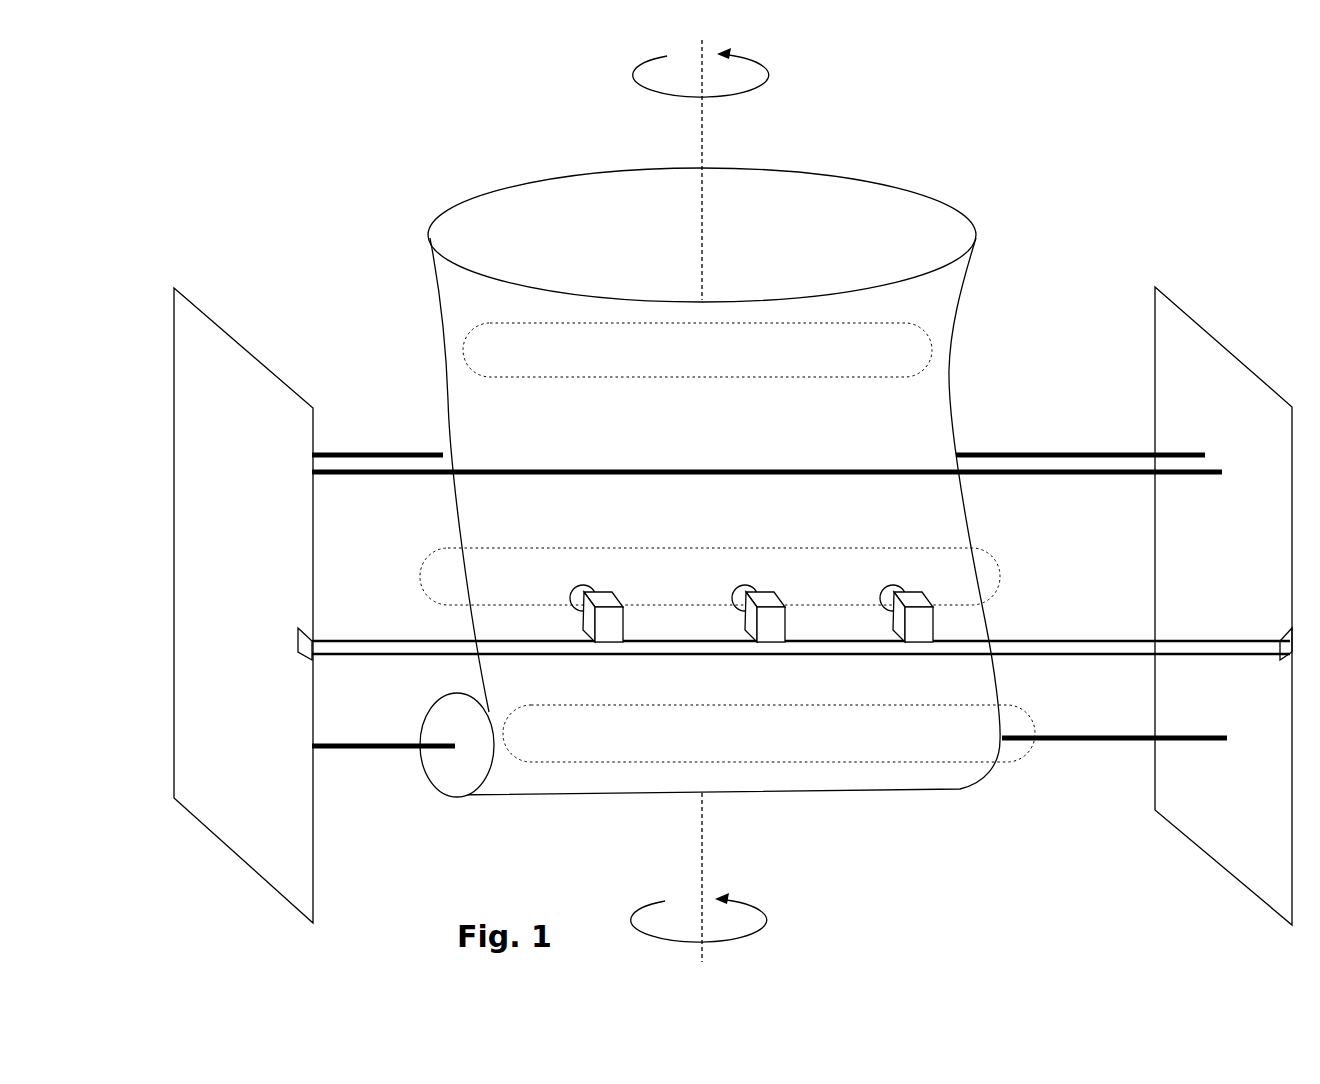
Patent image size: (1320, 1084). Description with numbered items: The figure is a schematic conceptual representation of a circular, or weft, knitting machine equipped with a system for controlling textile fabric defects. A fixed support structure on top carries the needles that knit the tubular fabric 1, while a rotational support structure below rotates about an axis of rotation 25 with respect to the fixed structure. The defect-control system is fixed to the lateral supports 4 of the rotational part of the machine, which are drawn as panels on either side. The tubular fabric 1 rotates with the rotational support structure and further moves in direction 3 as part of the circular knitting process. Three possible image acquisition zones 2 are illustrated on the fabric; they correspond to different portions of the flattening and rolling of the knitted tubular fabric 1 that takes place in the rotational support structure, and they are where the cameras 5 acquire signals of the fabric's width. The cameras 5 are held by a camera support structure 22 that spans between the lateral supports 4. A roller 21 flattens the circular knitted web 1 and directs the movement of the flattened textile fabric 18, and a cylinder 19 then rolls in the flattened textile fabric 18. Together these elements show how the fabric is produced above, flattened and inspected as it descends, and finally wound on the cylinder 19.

The tubular fabric 1 is at (417, 219).
The image acquisition zones 2 is at (1008, 703).
The direction of fabric movement 3 is at (555, 493).
The lateral supports 4 is at (213, 802).
The cameras 5 is at (918, 642).
The flattened textile fabric 18 is at (714, 531).
The cylinder 19 is at (430, 795).
The roller 21 is at (409, 482).
The camera support structure 22 is at (1177, 635).
The axis of rotation 25 is at (710, 126).